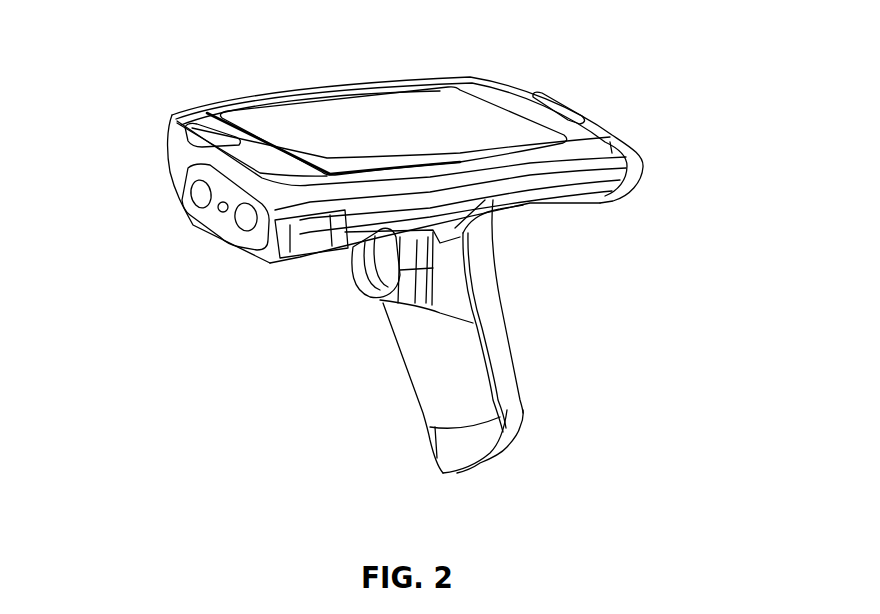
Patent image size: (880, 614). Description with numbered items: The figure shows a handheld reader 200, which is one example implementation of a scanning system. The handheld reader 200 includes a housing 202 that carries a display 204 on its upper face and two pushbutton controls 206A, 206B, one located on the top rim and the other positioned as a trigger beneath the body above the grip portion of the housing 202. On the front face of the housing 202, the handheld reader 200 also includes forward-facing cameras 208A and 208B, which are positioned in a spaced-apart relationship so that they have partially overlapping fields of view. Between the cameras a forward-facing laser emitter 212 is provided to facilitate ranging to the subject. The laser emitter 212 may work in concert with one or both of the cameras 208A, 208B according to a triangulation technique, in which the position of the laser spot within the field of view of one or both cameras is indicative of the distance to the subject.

The handheld reader 200 is at (217, 400).
The housing 202 is at (572, 203).
The display 204 is at (357, 108).
The pushbutton control 206A is at (560, 100).
The pushbutton control 206B is at (352, 258).
The forward-facing camera 208A is at (199, 212).
The forward-facing camera 208B is at (240, 229).
The forward-facing laser emitter 212 is at (222, 208).